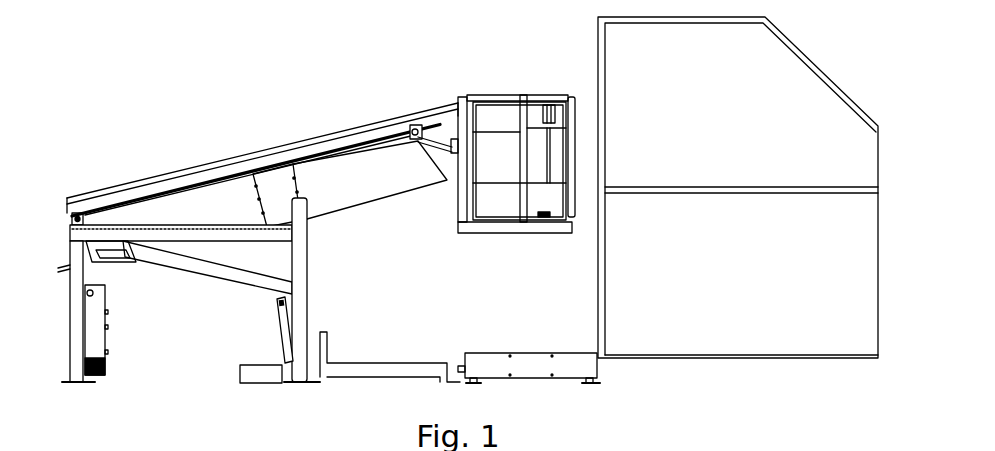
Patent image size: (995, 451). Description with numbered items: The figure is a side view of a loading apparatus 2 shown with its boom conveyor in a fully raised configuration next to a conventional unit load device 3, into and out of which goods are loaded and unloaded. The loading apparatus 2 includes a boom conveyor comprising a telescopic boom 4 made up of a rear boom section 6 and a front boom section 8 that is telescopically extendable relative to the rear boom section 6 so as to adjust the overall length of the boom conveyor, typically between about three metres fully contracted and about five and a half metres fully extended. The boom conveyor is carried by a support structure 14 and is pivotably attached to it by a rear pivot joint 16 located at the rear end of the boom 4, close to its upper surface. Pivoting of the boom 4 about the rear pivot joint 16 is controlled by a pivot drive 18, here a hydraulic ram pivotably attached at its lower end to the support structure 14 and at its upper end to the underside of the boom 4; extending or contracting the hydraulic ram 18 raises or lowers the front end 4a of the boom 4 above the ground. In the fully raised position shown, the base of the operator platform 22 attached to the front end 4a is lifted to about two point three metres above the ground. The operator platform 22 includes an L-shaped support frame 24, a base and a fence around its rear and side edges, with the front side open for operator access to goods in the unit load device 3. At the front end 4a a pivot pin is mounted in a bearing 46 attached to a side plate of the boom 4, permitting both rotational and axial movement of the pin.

The loading apparatus 2 is at (198, 99).
The unit load device 3 is at (355, 182).
The telescopic boom 4 is at (283, 151).
The front end of the boom 4a is at (448, 92).
The rear boom section 6 is at (149, 193).
The front boom section 8 is at (428, 104).
The support structure 14 is at (313, 298).
The rear pivot joint 16 is at (66, 210).
The pivot drive 18 is at (282, 327).
The operator platform 22 is at (513, 86).
The L-shaped support frame 24 is at (488, 236).
The bearing 46 is at (73, 195).